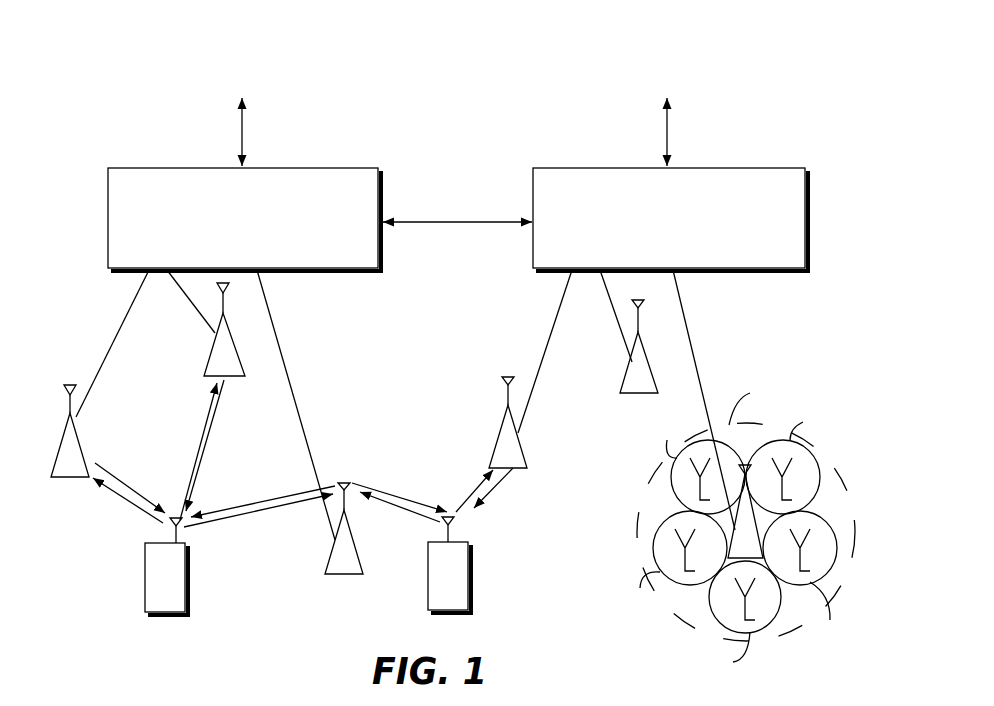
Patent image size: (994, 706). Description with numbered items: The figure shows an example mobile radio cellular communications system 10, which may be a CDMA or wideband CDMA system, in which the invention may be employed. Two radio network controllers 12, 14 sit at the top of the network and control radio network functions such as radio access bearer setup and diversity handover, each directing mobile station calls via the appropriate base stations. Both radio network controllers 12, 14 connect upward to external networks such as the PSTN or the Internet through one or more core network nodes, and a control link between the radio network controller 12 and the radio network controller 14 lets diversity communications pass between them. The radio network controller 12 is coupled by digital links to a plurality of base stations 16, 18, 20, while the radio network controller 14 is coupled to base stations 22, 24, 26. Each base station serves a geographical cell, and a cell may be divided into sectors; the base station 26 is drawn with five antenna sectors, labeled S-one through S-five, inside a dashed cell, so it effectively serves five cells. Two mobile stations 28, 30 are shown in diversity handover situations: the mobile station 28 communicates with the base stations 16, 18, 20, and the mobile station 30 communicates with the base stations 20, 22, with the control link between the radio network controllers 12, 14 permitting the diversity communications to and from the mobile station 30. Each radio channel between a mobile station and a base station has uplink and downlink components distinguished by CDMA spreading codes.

The mobile radio cellular communications system 10 is at (53, 108).
The radio network controller 12 is at (335, 173).
The radio network controller 14 is at (762, 173).
The base station 16 is at (65, 425).
The base station 18 is at (232, 350).
The base station 20 is at (363, 565).
The base station 22 is at (497, 440).
The base station 24 is at (626, 378).
The base station 26 is at (756, 527).
The mobile station 28 is at (188, 602).
The mobile station 30 is at (468, 585).